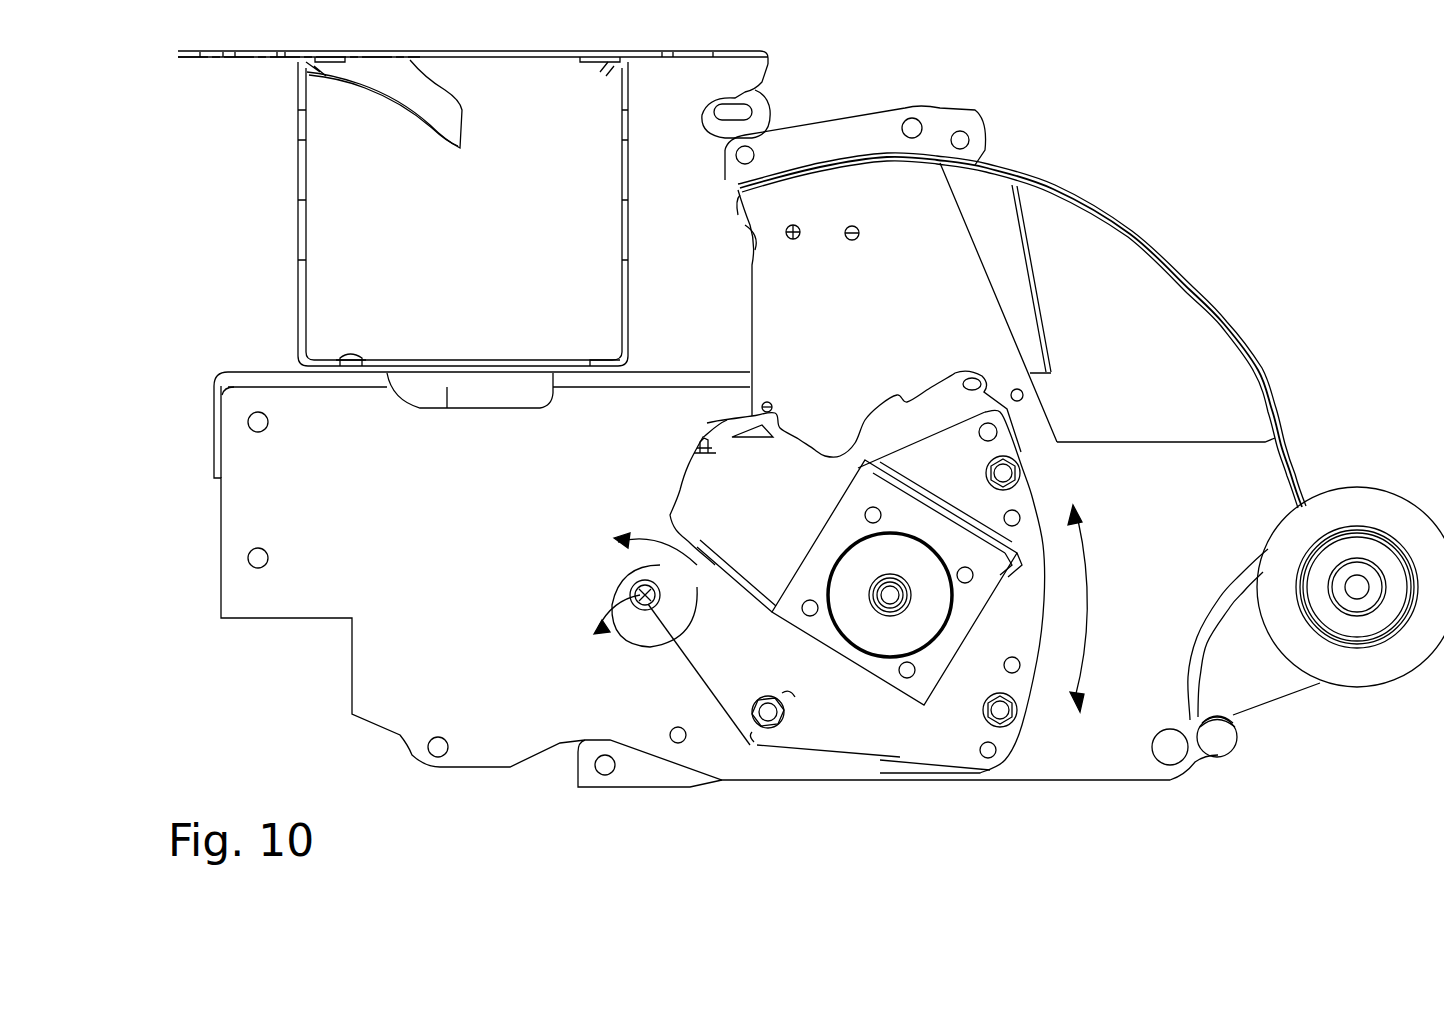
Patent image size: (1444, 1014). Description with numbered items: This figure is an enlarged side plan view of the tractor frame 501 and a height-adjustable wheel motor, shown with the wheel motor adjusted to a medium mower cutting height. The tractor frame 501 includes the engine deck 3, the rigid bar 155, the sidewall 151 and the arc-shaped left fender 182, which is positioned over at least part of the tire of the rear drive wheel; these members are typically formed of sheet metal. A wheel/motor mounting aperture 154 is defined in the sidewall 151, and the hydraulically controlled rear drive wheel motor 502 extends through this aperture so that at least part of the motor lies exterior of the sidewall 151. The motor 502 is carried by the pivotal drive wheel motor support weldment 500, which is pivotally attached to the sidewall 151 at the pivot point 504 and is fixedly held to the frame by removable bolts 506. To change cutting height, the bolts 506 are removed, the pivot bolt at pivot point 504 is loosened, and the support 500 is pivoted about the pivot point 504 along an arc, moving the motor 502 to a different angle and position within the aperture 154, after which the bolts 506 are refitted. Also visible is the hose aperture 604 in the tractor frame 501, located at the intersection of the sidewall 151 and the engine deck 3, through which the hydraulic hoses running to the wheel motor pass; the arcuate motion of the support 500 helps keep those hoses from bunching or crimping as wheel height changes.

The engine deck 3 is at (698, 355).
The sidewall 151 is at (376, 664).
The wheel/motor mounting aperture 154 is at (690, 490).
The rigid bar 155 is at (1228, 738).
The left fender 182 is at (1045, 185).
The pivotal drive wheel motor support weldment 500 is at (952, 500).
The tractor frame 501 is at (362, 476).
The rear drive wheel motor 502 is at (889, 625).
The pivot point 504 is at (630, 612).
The removable bolts 506 is at (1018, 461).
The hose aperture 604 is at (507, 390).